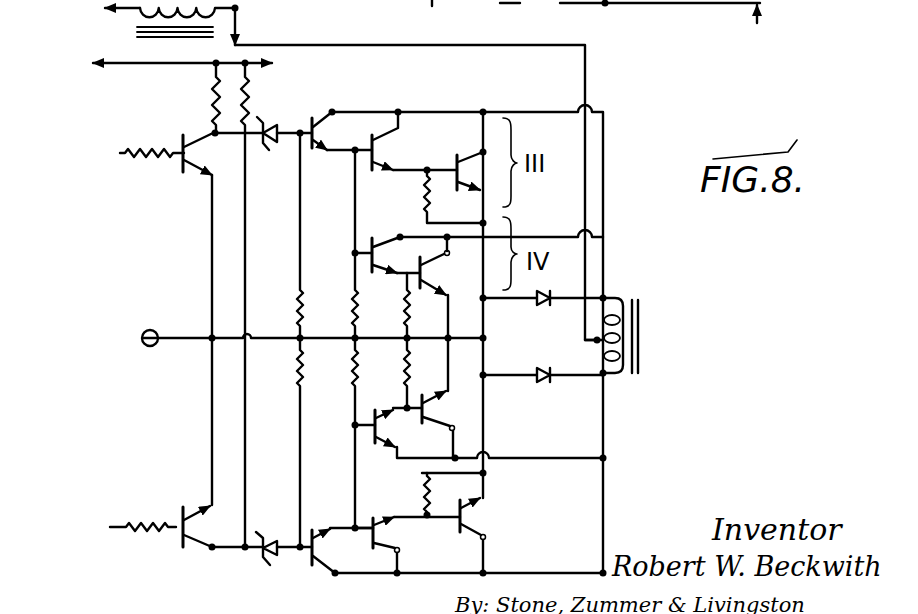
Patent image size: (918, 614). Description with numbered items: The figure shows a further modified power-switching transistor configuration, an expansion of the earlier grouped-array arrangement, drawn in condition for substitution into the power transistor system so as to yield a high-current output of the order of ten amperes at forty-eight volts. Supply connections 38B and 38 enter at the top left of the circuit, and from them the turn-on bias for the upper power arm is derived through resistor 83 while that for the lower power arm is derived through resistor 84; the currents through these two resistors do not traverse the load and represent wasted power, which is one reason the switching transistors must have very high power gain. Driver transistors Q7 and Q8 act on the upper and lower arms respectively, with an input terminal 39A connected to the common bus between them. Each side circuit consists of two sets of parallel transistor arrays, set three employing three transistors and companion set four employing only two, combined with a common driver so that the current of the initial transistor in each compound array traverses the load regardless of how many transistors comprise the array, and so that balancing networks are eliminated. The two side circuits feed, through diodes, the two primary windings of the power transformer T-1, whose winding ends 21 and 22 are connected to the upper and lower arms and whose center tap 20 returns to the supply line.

The supply line 38B is at (419, 170).
The output line 38 is at (215, 73).
The resistor 83 is at (190, 98).
The resistor 84 is at (277, 98).
The transistor Q7 is at (176, 154).
The transistor Q8 is at (169, 551).
The input terminal 39A is at (312, 322).
The transformer center tap 20 is at (556, 344).
The transformer primary end 21 is at (570, 287).
The transformer primary end 22 is at (543, 400).
The transformer T-1 is at (646, 352).